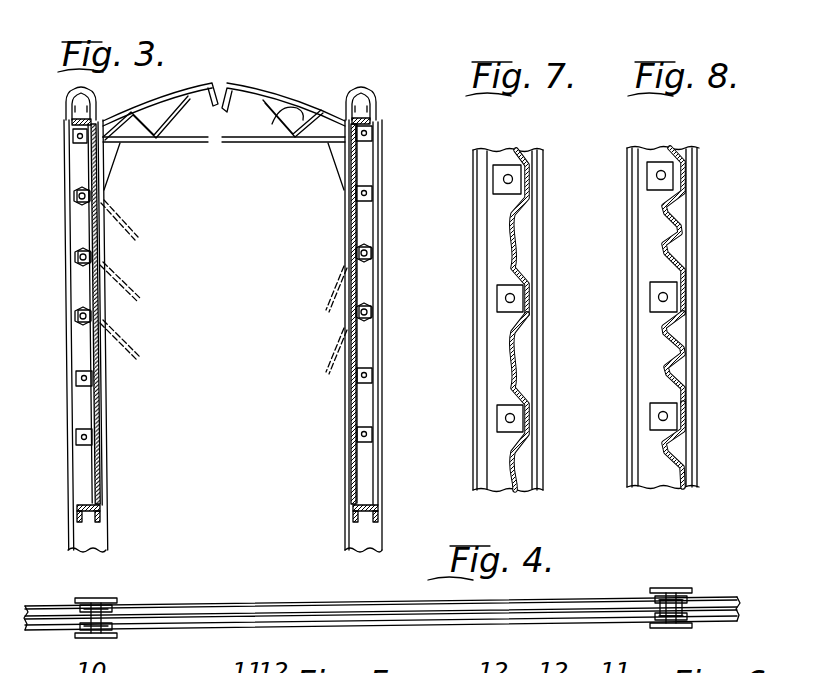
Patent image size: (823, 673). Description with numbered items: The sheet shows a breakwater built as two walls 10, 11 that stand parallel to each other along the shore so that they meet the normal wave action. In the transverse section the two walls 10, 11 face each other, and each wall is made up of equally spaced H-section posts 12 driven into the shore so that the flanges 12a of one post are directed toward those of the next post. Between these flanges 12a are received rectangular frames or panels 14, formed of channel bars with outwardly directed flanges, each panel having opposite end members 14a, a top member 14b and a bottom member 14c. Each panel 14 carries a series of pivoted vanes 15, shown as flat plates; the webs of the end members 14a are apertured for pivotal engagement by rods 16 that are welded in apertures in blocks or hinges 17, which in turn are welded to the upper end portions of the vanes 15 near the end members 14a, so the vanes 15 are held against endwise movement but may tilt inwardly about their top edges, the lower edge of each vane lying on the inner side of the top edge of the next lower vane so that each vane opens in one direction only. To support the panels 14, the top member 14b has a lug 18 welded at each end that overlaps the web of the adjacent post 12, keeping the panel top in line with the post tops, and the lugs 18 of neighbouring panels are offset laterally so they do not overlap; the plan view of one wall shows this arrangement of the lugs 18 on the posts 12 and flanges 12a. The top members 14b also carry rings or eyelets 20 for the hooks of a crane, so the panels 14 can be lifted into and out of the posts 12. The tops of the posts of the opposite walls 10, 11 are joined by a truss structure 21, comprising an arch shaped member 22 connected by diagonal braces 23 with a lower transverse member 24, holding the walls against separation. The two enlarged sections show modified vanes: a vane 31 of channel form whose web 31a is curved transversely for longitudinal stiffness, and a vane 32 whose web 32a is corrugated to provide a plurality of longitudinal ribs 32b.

In FIG. 3, the wall 10 is at (54, 176).
In FIG. 3, the wall 11 is at (435, 155).
In FIG. 3, the post 12 is at (68, 283).
In FIG. 7, the post 12 is at (591, 280).
In FIG. 8, the post 12 is at (633, 369).
In FIG. 4, the post 12 is at (88, 599).
In FIG. 4, the flange 12a is at (673, 569).
In FIG. 4, the frame or panel 14 is at (521, 652).
In FIG. 3, the end member 14a is at (88, 344).
In FIG. 7, the end member 14a is at (494, 241).
In FIG. 8, the end member 14a is at (647, 239).
In FIG. 4, the end member 14a is at (120, 620).
In FIG. 3, the top member 14b is at (68, 119).
In FIG. 4, the top member 14b is at (569, 592).
In FIG. 3, the bottom member 14c is at (77, 517).
In FIG. 3, the vane 15 is at (99, 476).
In FIG. 3, the rod 16 is at (78, 433).
In FIG. 7, the rod 16 is at (508, 298).
In FIG. 8, the rod 16 is at (660, 416).
In FIG. 3, the block or hinge 17 is at (78, 448).
In FIG. 7, the block or hinge 17 is at (498, 311).
In FIG. 8, the block or hinge 17 is at (652, 433).
In FIG. 3, the lug 18 is at (357, 93).
In FIG. 4, the lug 18 is at (110, 606).
In FIG. 3, the ring or eyelet 20 is at (133, 100).
In FIG. 3, the truss structure 21 is at (286, 69).
In FIG. 3, the arch shaped member 22 is at (214, 80).
In FIG. 3, the diagonal brace 23 is at (286, 130).
In FIG. 3, the lower transverse member 24 is at (244, 143).
In FIG. 7, the vane 31 is at (518, 231).
In FIG. 7, the web 31a is at (513, 351).
In FIG. 8, the vane 32 is at (684, 361).
In FIG. 8, the web 32a is at (758, 317).
In FIG. 8, the longitudinal rib 32b is at (669, 257).